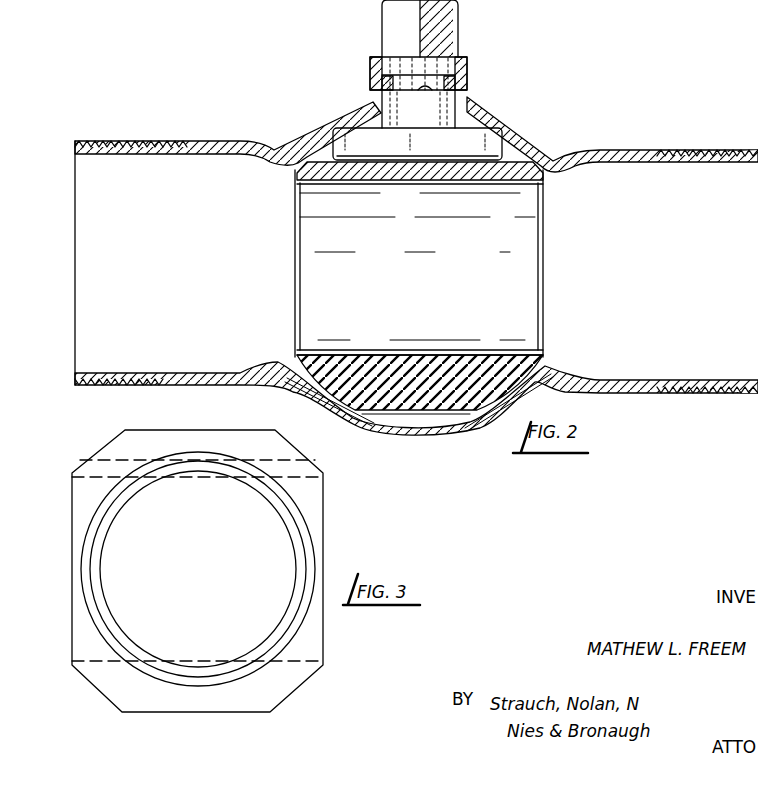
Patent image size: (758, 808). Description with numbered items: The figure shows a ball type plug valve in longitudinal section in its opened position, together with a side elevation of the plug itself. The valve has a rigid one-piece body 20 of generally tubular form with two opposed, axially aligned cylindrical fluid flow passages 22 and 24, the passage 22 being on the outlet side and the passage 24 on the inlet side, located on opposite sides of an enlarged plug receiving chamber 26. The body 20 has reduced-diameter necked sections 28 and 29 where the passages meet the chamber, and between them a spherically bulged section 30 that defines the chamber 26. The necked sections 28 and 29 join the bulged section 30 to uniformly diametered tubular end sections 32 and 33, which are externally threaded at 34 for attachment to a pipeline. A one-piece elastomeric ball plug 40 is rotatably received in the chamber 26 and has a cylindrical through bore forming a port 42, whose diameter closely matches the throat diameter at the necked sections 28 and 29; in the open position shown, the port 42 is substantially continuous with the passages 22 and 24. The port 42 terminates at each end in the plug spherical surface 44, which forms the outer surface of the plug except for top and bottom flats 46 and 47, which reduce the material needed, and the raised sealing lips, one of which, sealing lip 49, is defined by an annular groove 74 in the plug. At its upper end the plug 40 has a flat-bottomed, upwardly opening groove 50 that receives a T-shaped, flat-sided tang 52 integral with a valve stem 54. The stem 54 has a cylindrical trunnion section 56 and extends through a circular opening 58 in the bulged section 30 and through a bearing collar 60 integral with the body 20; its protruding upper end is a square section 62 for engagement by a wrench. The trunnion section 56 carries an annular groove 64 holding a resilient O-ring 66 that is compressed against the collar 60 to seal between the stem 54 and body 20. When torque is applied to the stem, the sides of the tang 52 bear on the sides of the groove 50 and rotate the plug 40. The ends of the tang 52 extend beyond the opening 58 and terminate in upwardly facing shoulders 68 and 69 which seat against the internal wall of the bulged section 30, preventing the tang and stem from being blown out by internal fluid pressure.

In FIG. 2, the body 20 is at (186, 138).
In FIG. 2, the fluid flow passage 22 is at (665, 380).
In FIG. 2, the fluid flow passage 24 is at (120, 371).
In FIG. 2, the plug receiving chamber 26 is at (393, 418).
In FIG. 2, the necked section 28 is at (550, 153).
In FIG. 2, the necked section 29 is at (290, 146).
In FIG. 2, the spherically bulged section 30 is at (336, 124).
In FIG. 2, the tubular end section 32 is at (650, 146).
In FIG. 2, the tubular end section 33 is at (230, 137).
In FIG. 2, the external threads 34 is at (132, 140).
In FIG. 2, the ball plug 40 is at (548, 282).
In FIG. 3, the ball plug 40 is at (86, 436).
In FIG. 2, the port 42 is at (366, 354).
In FIG. 3, the port 42 is at (310, 482).
In FIG. 2, the plug spherical surface 44 is at (308, 397).
In FIG. 3, the plug spherical surface 44 is at (297, 695).
In FIG. 3, the top flat 46 is at (132, 430).
In FIG. 2, the bottom flat 47 is at (418, 414).
In FIG. 3, the bottom flat 47 is at (197, 715).
In FIG. 3, the sealing lip 49 is at (92, 533).
In FIG. 2, the groove 50 is at (406, 160).
In FIG. 2, the tang 52 is at (455, 149).
In FIG. 2, the valve stem 54 is at (461, 55).
In FIG. 2, the trunnion section 56 is at (380, 86).
In FIG. 2, the circular opening 58 is at (380, 115).
In FIG. 2, the bearing collar 60 is at (372, 60).
In FIG. 2, the square section 62 is at (386, 17).
In FIG. 2, the annular groove 64 is at (425, 88).
In FIG. 2, the O-ring 66 is at (457, 86).
In FIG. 2, the shoulder 68 is at (330, 128).
In FIG. 2, the shoulder 69 is at (498, 124).
In FIG. 3, the annular groove 74 is at (130, 492).